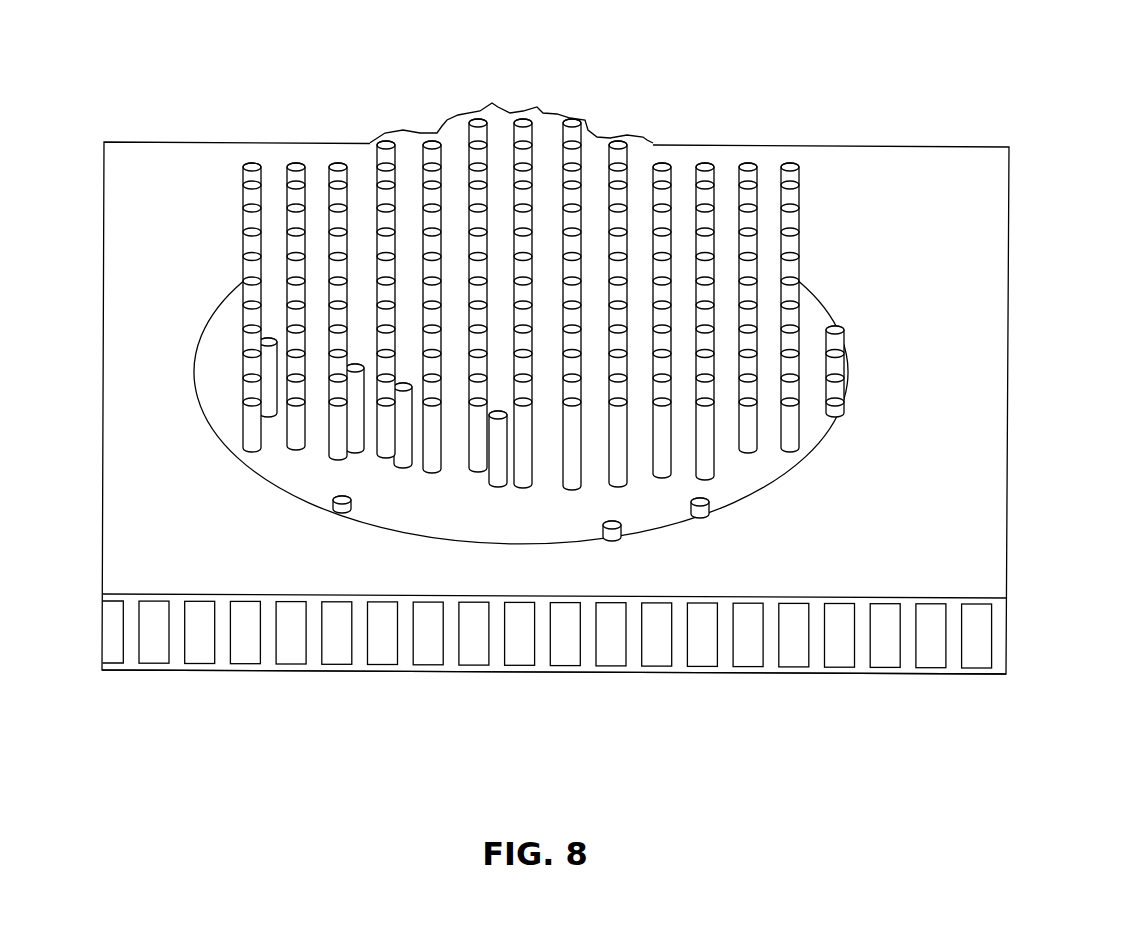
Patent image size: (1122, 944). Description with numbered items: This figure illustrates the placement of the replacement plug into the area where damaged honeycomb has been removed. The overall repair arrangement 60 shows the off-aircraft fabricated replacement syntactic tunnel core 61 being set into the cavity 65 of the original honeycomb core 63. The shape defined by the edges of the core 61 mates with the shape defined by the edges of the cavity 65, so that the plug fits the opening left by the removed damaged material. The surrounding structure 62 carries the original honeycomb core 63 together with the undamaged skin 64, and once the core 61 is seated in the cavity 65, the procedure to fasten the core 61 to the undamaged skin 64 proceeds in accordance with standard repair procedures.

The probe card / pin array assembly 60 is at (952, 68).
The core 61 is at (552, 112).
The plate 62 is at (1009, 165).
The original honeycomb core 63 is at (791, 648).
The undamaged skin 64 is at (922, 675).
The cavity 65 is at (525, 593).